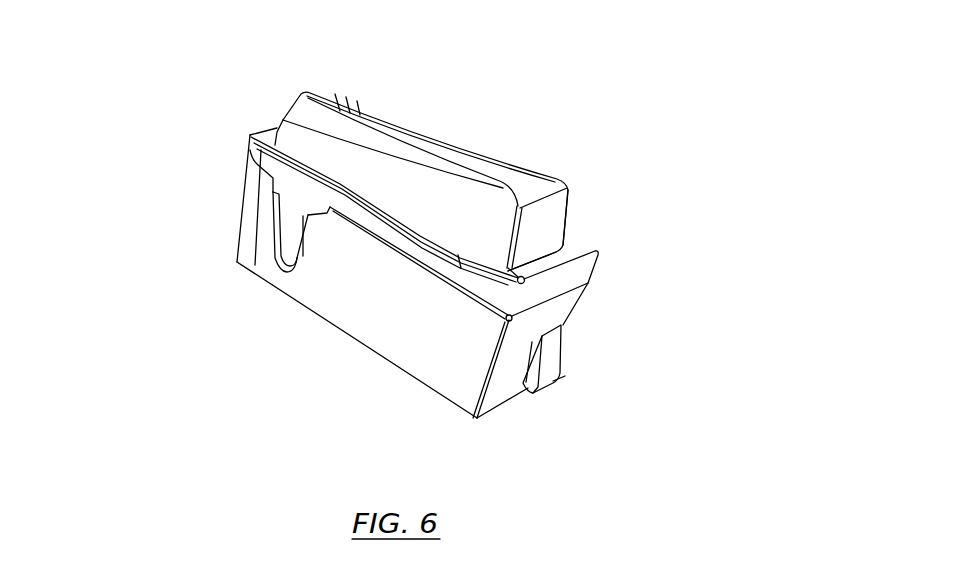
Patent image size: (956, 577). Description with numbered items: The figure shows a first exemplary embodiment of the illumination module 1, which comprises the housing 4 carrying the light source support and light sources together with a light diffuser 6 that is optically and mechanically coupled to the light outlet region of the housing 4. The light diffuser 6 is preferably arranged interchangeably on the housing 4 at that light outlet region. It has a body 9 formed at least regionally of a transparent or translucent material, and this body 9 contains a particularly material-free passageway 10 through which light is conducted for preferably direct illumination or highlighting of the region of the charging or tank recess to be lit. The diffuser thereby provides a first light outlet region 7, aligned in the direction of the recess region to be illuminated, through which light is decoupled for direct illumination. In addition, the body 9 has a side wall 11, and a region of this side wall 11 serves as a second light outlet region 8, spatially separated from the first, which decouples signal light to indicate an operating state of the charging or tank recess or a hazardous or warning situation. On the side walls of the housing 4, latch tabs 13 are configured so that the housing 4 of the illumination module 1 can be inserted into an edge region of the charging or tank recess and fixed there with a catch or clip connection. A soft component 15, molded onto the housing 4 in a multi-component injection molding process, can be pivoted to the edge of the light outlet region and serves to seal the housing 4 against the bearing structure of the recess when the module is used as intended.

The illumination module 1 is at (419, 73).
The housing 4 is at (388, 323).
The light diffuser 6 is at (583, 162).
The first light outlet region 7 is at (423, 143).
The passageway 10 is at (409, 188).
The second light outlet region 8 is at (327, 140).
The body 9 is at (272, 90).
The side wall 11 is at (547, 235).
The latch tab 13 is at (563, 359).
The soft component 15 is at (277, 162).